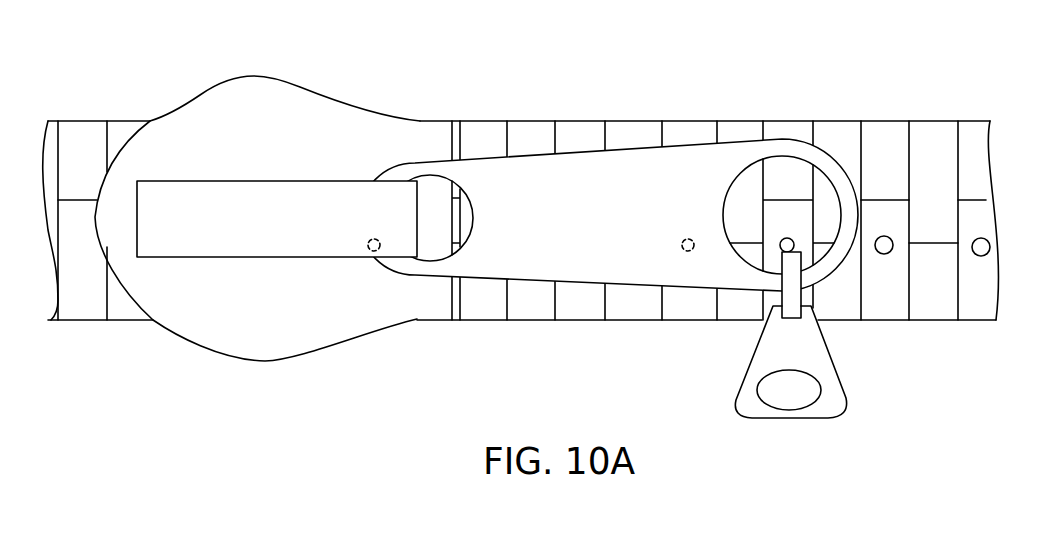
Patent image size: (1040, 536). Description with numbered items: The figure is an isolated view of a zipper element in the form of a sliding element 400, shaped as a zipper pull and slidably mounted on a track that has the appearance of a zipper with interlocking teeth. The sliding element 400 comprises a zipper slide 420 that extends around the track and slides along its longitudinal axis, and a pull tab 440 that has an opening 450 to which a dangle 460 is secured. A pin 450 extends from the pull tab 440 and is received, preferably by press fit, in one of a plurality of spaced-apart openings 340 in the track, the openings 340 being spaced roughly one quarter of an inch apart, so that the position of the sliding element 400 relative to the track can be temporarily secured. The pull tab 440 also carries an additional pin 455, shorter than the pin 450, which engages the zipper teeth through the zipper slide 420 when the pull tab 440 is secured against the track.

The sliding element 400 is at (113, 85).
The zipper slide 420 is at (253, 93).
The pull tab 440 is at (617, 180).
The pin 450 is at (773, 177).
The additional pin 455 is at (377, 256).
The opening 340 is at (885, 254).
The dangle 460 is at (833, 400).